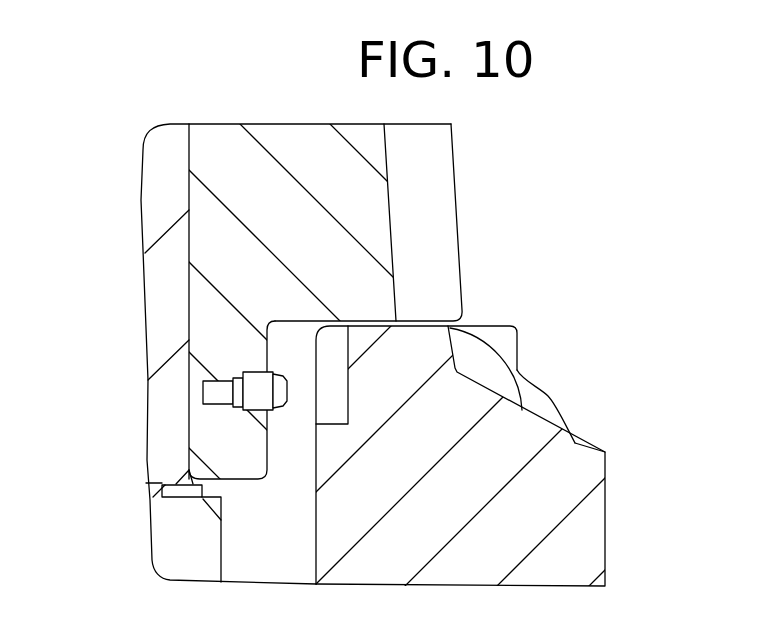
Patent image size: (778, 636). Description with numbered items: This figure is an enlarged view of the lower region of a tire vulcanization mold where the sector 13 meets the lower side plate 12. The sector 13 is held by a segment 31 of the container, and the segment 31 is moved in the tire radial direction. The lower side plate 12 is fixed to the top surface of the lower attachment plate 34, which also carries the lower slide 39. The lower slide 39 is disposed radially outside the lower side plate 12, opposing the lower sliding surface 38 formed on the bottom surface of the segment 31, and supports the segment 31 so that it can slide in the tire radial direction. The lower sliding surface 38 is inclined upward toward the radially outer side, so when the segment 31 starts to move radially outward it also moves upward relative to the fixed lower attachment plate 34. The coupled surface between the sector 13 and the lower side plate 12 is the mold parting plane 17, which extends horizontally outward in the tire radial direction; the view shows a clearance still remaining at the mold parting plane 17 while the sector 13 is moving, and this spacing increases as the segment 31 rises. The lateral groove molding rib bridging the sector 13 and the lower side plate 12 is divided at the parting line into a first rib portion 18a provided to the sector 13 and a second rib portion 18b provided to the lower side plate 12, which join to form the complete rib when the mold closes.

The lower side plate 12 is at (573, 485).
The sector 13 is at (215, 200).
The mold parting plane 17 is at (273, 326).
The first rib portion 18a is at (452, 232).
The second rib portion 18b is at (525, 370).
The segment 31 is at (162, 293).
The lower attachment plate 34 is at (176, 553).
The lower sliding surface 38 is at (166, 492).
The lower slide 39 is at (188, 478).